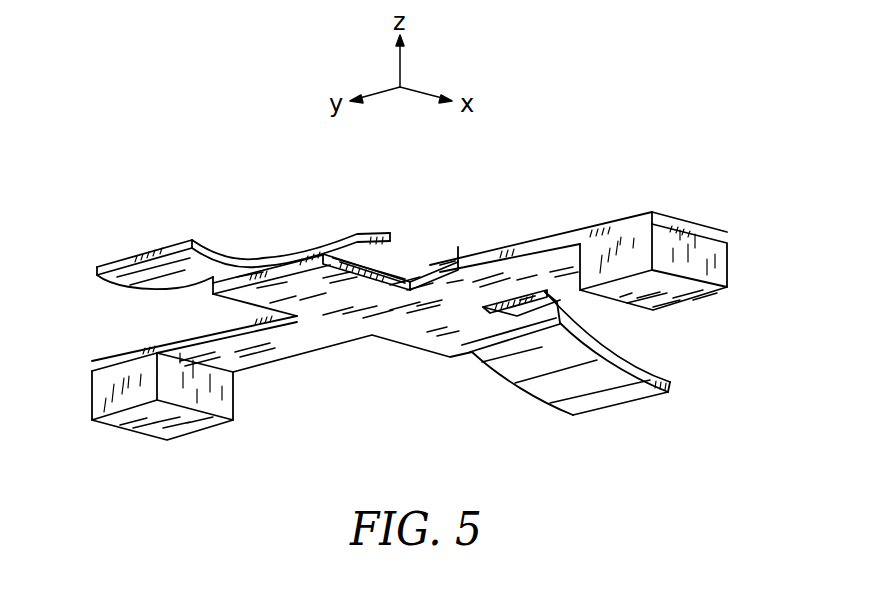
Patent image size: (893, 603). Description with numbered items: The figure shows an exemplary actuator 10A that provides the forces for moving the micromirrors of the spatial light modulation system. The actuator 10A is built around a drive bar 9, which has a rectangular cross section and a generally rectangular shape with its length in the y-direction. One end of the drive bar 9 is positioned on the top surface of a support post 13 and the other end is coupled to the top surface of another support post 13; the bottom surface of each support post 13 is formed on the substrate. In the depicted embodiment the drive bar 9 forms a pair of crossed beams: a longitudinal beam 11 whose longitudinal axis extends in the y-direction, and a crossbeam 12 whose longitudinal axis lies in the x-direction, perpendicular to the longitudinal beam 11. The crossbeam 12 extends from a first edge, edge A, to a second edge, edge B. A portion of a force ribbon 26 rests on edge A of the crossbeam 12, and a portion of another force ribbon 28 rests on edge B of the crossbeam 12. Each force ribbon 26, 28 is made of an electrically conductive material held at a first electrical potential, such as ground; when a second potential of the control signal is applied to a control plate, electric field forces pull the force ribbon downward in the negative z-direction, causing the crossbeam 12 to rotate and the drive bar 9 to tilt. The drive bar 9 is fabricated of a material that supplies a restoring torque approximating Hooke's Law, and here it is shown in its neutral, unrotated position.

The actuator 10A is at (110, 142).
The drive bar 9 is at (571, 228).
The longitudinal beam 11 is at (104, 357).
The support post 13 is at (218, 400).
The crossbeam 12 is at (392, 277).
The force ribbon 28 is at (467, 268).
The force ribbon 26 is at (356, 232).
The edge A is at (284, 266).
The edge B is at (557, 318).